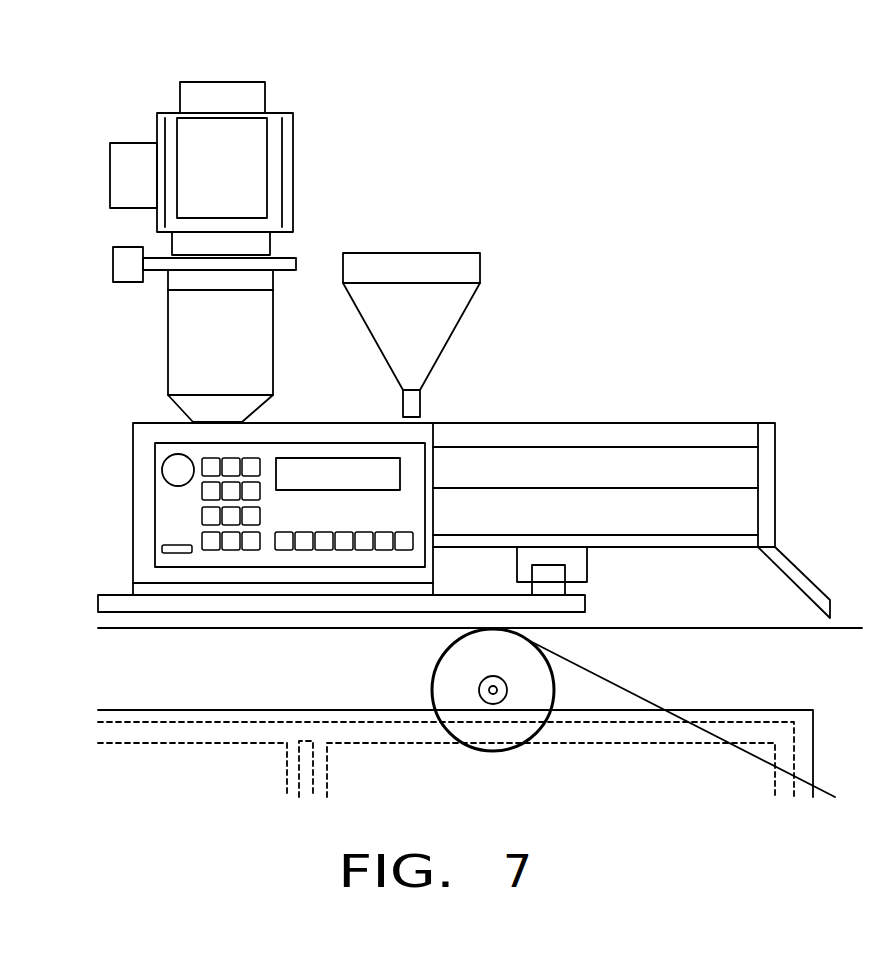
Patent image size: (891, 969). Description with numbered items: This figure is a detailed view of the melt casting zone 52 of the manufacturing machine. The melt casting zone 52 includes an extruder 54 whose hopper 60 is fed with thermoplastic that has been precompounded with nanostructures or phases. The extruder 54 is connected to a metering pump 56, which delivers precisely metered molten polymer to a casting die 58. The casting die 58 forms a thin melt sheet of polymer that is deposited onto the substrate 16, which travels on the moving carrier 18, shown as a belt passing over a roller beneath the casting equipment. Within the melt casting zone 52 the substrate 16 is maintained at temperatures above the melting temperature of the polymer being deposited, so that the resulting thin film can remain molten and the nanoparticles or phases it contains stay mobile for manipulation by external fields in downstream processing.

The substrate 16 is at (845, 629).
The moving carrier 18 is at (643, 697).
The melt casting zone 52 is at (545, 172).
The extruder 54 is at (508, 407).
The metering pump 56 is at (662, 435).
The casting die 58 is at (817, 595).
The hopper 60 is at (480, 270).